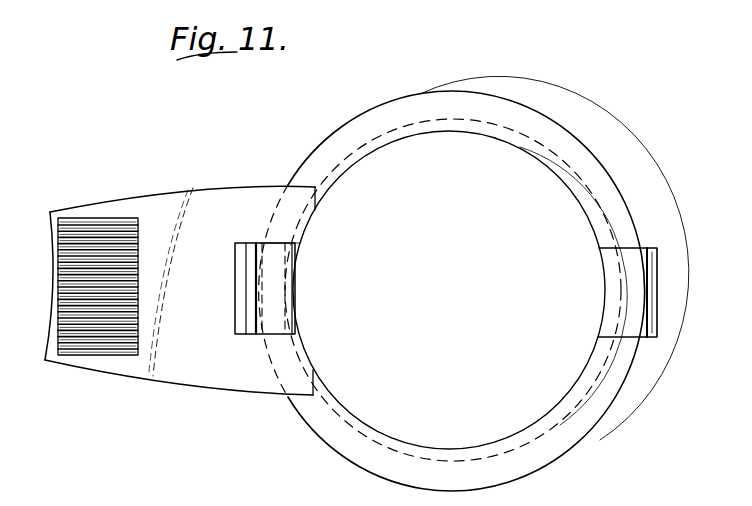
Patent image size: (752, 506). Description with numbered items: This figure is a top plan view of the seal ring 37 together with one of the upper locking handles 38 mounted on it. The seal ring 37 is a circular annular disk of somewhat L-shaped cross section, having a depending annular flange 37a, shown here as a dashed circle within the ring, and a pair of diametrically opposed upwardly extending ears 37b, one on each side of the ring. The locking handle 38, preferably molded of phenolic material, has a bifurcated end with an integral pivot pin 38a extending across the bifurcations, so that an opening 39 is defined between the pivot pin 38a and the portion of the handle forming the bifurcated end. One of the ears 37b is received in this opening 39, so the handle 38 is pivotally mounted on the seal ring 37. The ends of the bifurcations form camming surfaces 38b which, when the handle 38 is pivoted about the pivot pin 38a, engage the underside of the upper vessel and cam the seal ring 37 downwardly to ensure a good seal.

The seal ring 37 is at (538, 128).
The depending annular flange 37a is at (440, 118).
The ears 37b is at (252, 312).
The locking handle 38 is at (177, 203).
The pivot pin 38a is at (280, 297).
The camming surfaces 38b is at (307, 227).
The opening 39 is at (241, 267).